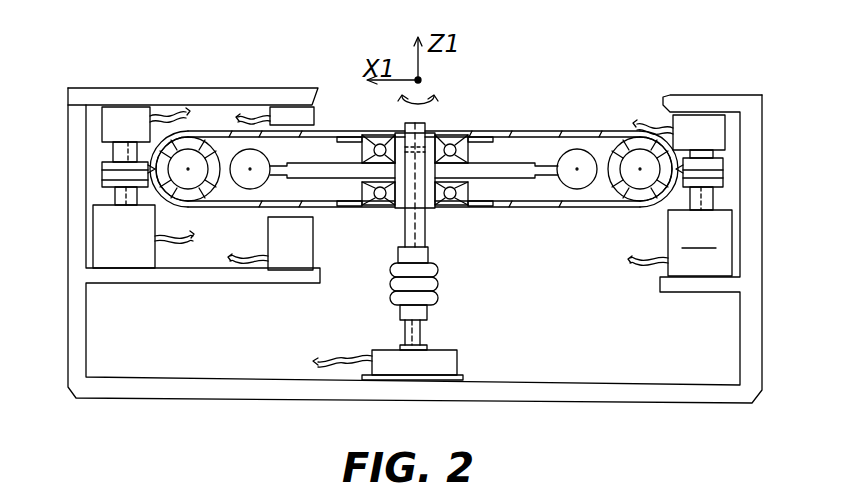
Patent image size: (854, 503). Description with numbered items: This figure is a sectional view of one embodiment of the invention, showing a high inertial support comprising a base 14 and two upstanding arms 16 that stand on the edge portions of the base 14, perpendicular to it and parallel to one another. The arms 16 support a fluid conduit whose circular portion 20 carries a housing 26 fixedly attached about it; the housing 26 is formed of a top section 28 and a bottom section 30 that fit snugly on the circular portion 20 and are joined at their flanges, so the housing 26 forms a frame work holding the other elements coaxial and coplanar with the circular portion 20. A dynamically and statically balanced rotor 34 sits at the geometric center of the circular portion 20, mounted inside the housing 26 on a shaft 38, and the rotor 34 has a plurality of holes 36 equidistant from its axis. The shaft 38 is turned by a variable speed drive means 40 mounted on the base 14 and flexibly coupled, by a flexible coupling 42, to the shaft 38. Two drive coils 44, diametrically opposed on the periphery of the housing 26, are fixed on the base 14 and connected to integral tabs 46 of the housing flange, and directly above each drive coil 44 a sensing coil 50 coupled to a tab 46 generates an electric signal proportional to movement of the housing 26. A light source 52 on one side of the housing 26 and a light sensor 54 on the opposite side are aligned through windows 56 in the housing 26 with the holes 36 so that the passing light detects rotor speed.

The base 14 is at (200, 387).
The upstanding arm 16 is at (78, 156).
The circular portion 20 is at (192, 138).
The housing 26 is at (598, 133).
The top section 28 is at (545, 133).
The bottom section 30 is at (520, 208).
The rotor 34 is at (582, 183).
The holes 36 is at (528, 180).
The shaft 38 is at (427, 130).
The variable speed drive means 40 is at (447, 362).
The flexible coupling 42 is at (395, 288).
The drive coil 44 is at (113, 262).
The tab 46 is at (100, 165).
The sensing coil 50 is at (125, 107).
The light source 52 is at (290, 258).
The light sensor 54 is at (295, 107).
The window 56 is at (293, 131).